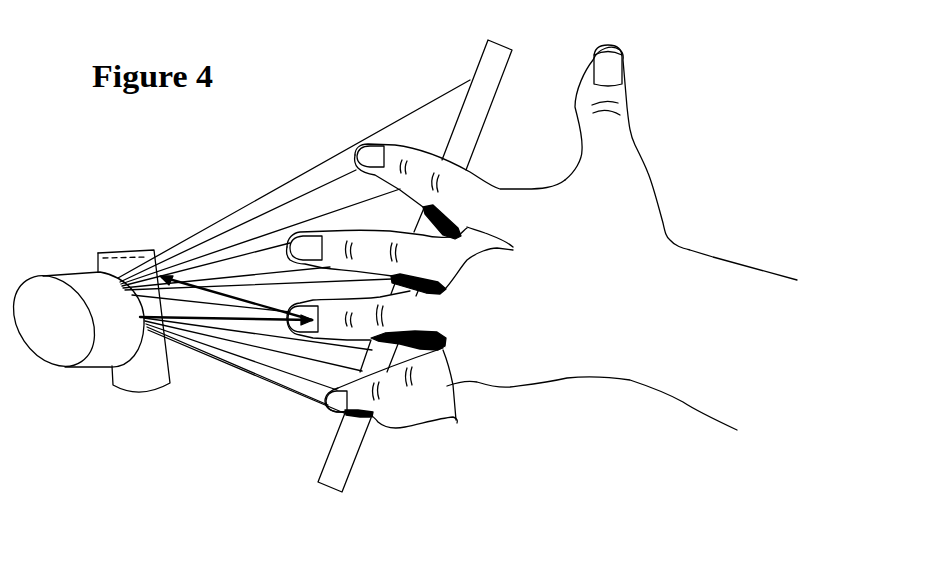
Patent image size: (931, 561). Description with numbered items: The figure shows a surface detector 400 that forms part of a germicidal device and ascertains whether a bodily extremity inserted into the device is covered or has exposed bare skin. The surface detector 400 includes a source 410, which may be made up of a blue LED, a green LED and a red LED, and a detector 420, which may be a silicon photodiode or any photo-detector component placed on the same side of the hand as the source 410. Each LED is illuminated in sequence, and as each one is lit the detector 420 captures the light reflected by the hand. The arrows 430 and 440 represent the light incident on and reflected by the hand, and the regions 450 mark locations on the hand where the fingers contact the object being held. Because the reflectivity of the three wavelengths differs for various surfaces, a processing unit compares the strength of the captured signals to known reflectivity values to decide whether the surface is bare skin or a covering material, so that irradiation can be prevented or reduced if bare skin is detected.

The surface detector 400 is at (327, 113).
The source 410 is at (72, 284).
The detector 420 is at (157, 376).
The arrows 430 is at (233, 340).
The arrows 440 is at (217, 290).
The finger contact regions 450 is at (496, 333).